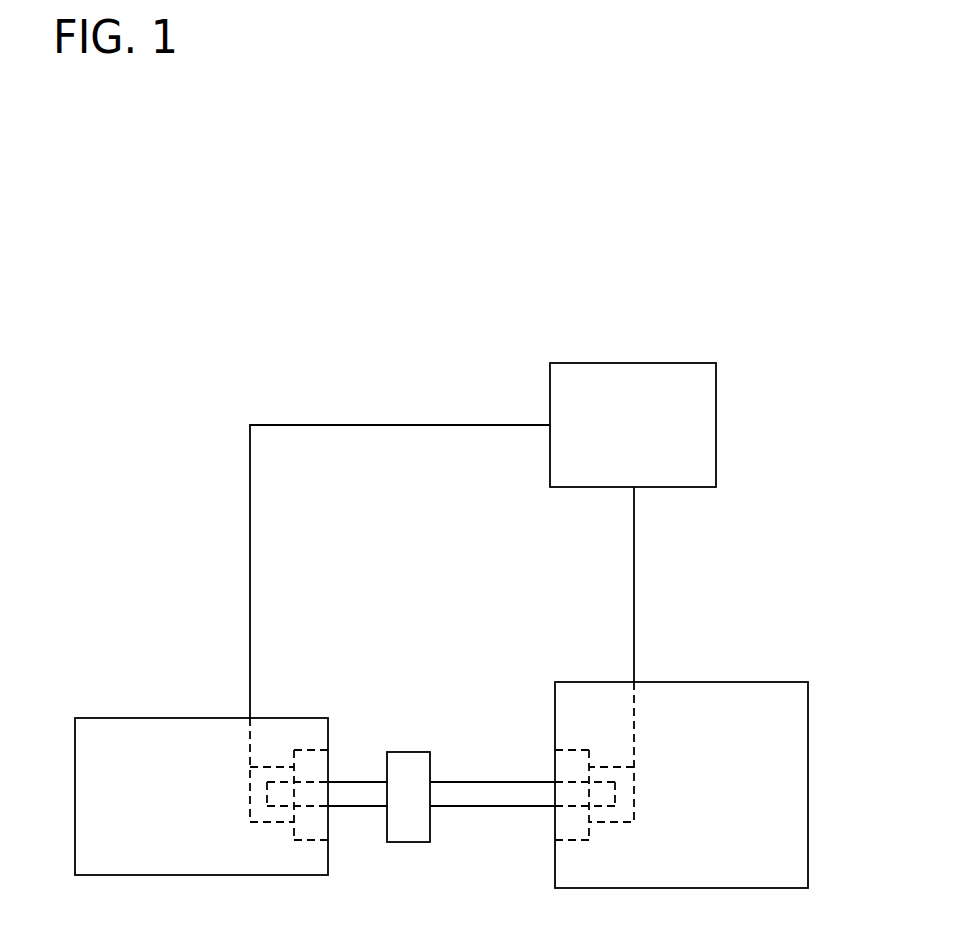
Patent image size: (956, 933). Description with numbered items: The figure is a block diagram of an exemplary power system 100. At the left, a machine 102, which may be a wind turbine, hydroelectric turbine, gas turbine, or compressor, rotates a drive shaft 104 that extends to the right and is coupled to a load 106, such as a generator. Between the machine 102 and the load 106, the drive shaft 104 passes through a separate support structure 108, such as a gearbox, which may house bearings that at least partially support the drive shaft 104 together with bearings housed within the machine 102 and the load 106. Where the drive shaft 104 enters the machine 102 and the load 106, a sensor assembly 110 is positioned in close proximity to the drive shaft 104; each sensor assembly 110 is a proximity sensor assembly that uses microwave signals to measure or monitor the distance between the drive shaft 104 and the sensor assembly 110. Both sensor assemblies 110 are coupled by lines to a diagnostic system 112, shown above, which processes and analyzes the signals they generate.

The power system 100 is at (236, 272).
The machine 102 is at (142, 718).
The drive shaft 104 is at (463, 782).
The load 106 is at (740, 682).
The support structure 108 is at (409, 752).
The sensor assembly 110 is at (294, 814).
The diagnostic system 112 is at (659, 442).